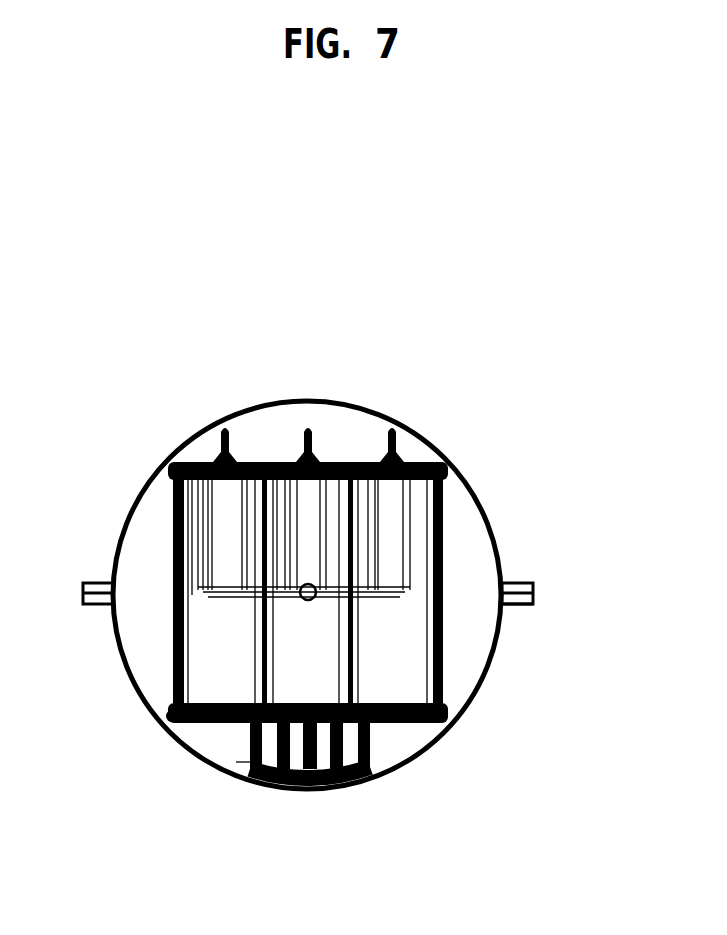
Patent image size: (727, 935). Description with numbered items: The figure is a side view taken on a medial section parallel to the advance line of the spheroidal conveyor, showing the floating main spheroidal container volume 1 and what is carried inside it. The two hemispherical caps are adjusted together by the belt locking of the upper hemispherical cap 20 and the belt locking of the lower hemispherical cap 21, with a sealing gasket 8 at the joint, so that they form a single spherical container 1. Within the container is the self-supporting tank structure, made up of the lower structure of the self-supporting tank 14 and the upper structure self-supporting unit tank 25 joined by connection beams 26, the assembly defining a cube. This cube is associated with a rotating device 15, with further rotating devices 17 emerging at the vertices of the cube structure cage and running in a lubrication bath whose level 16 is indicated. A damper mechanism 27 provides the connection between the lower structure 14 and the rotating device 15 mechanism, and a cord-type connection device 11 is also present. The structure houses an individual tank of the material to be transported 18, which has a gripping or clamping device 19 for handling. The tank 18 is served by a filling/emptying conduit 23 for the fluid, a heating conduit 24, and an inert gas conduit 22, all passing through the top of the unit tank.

The floating main spheroidal container volume 1 is at (128, 510).
The sealing gasket 8 is at (528, 580).
The cord-type connection device 11 is at (317, 601).
The lower structure of the self-supporting tank 14 is at (410, 725).
The rotating device 15 is at (262, 790).
The lubrication bath level 16 is at (388, 773).
The rotating device arranged in the vertices of a cube structure cage 17 is at (168, 722).
The individual tank of the material to be transported 18 is at (395, 518).
The gripping or clamping device 19 is at (398, 440).
The belt locking of the upper hemispherical cap 20 is at (572, 541).
The belt locking of the lower hemispherical cap 21 is at (533, 603).
The inert gas conduit 22 is at (323, 462).
The filling/emptying conduit of the tank unit 23 is at (285, 462).
The heating conduit of the tank unit 24 is at (293, 462).
The upper structure self-supporting unit tank 25 is at (347, 462).
The connection beams 26 is at (177, 633).
The damper mechanism 27 is at (214, 805).